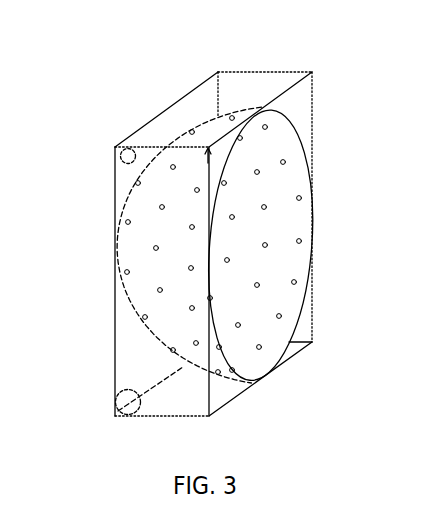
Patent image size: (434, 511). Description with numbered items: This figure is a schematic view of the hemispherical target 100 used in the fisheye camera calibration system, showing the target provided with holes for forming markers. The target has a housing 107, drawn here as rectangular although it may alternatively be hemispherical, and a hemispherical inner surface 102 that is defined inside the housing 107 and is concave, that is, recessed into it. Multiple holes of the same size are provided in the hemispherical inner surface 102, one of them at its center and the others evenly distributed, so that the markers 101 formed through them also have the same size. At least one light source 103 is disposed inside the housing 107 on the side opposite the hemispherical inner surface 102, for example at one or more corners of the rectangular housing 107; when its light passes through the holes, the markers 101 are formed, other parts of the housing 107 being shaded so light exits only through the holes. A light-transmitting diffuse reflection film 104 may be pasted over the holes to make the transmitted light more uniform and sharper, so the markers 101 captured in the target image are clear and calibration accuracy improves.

The hemispherical target 100 is at (110, 112).
The housing 107 is at (265, 72).
The markers 101 is at (285, 161).
The light-transmitting diffuse reflection film 104 is at (301, 197).
The hemispherical inner surface 102 is at (297, 267).
The light source 103 is at (119, 162).